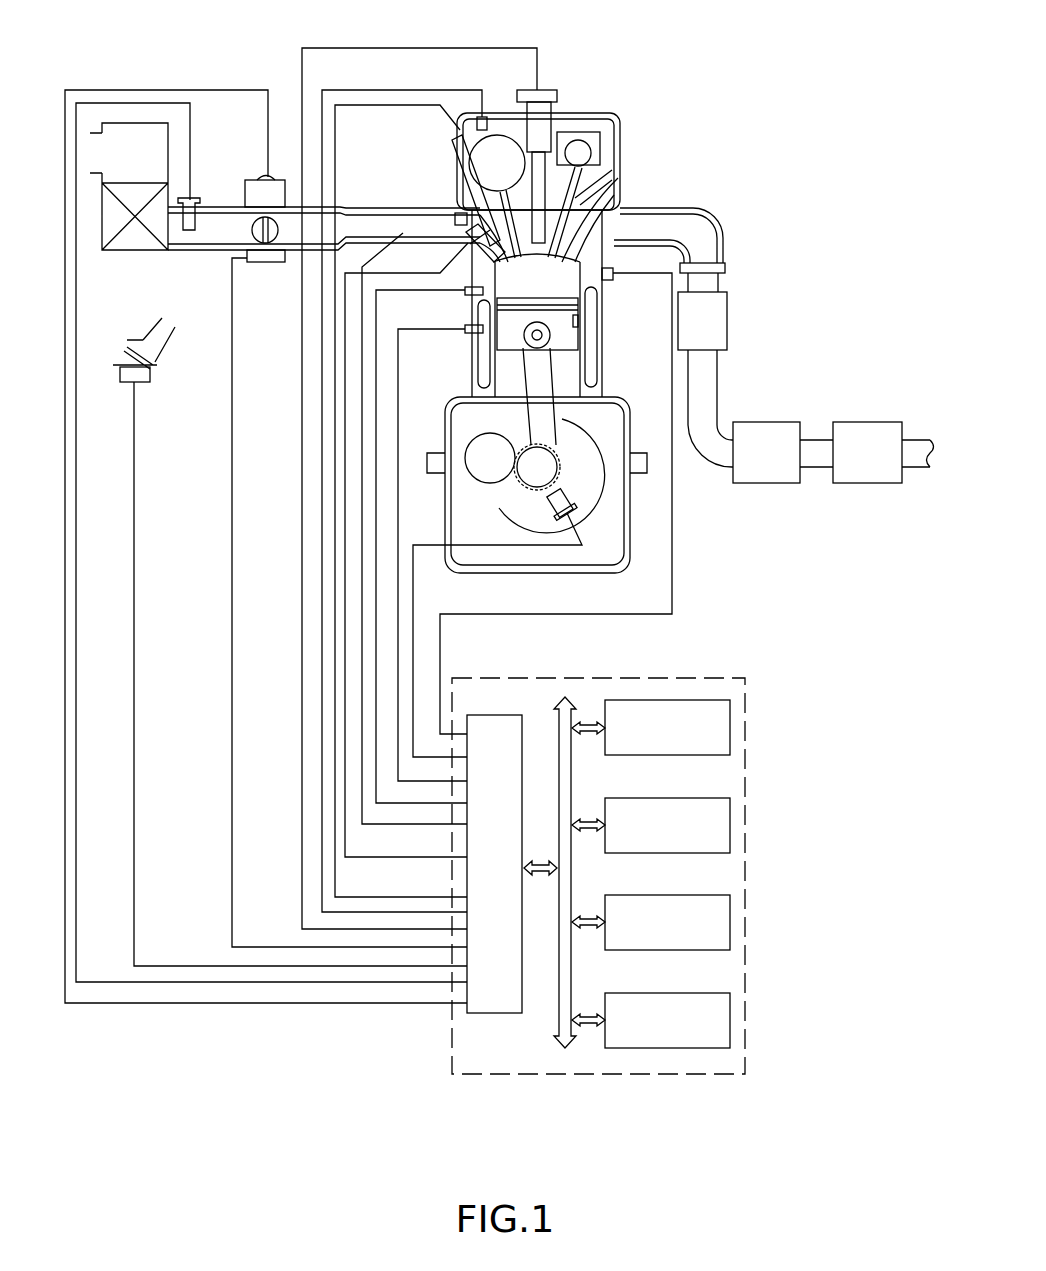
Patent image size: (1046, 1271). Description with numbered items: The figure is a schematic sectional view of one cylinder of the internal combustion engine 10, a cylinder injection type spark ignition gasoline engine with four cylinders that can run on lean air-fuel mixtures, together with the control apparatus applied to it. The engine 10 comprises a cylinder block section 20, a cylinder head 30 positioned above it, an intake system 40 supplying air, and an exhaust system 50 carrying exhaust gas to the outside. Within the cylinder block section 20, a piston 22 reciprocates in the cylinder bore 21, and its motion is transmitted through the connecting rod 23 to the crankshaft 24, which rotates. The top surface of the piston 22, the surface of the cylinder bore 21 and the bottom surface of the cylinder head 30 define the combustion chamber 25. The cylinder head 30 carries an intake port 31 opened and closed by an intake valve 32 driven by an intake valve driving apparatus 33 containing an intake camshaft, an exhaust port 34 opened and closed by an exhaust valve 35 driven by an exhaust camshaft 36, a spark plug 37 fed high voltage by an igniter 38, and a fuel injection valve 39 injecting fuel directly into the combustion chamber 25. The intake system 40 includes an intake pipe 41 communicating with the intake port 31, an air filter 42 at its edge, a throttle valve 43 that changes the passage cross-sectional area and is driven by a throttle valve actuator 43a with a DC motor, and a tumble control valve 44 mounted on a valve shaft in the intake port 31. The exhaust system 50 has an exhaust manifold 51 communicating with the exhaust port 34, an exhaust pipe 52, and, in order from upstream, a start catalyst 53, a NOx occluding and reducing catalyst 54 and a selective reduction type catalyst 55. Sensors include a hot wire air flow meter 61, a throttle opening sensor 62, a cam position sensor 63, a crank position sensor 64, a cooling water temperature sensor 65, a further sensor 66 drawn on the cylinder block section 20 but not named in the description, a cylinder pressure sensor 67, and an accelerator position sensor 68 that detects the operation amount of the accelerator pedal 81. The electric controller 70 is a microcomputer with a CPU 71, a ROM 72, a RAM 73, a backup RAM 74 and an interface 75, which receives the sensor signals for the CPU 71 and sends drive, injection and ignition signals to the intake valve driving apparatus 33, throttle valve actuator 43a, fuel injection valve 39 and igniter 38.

The internal combustion engine 10 is at (663, 38).
The cylinder block section 20 is at (467, 401).
The cylinder bore 21 is at (578, 305).
The piston 22 is at (478, 352).
The connecting rod 23 is at (598, 385).
The crankshaft 24 is at (545, 462).
The combustion chamber 25 is at (529, 293).
The cylinder head 30 is at (642, 118).
The intake port 31 is at (472, 188).
The intake valve 32 is at (468, 162).
The intake valve driving apparatus 33 is at (500, 145).
The exhaust port 34 is at (614, 183).
The exhaust valve 35 is at (616, 207).
The exhaust camshaft 36 is at (580, 141).
The spark plug 37 is at (600, 172).
The igniter 38 is at (540, 92).
The fuel injection valve 39 is at (460, 250).
The intake system 40 is at (271, 57).
The intake pipe 41 is at (355, 208).
The air filter 42 is at (118, 252).
The throttle valve 43 is at (240, 240).
The throttle valve actuator 43a is at (262, 176).
The tumble control valve 44 is at (457, 212).
The exhaust system 50 is at (735, 163).
The exhaust manifold 51 is at (705, 215).
The exhaust pipe 52 is at (717, 398).
The start catalyst 53 is at (727, 316).
The NOx occluding and reducing catalyst 54 is at (750, 422).
The selective reduction type catalyst 55 is at (866, 422).
The air flow meter 61 is at (192, 197).
The throttle opening sensor 62 is at (270, 263).
The cam position sensor 63 is at (481, 115).
The crank position sensor 64 is at (582, 506).
The cooling water temperature sensor 65 is at (465, 331).
The water temperature sensor 66 is at (465, 292).
The cylinder pressure sensor 67 is at (612, 281).
The accelerator position sensor 68 is at (127, 385).
The electric controller 70 is at (642, 1076).
The CPU 71 is at (730, 728).
The ROM 72 is at (730, 825).
The RAM 73 is at (730, 922).
The backup RAM 74 is at (730, 1020).
The interface 75 is at (488, 1014).
The accelerator pedal 81 is at (124, 350).